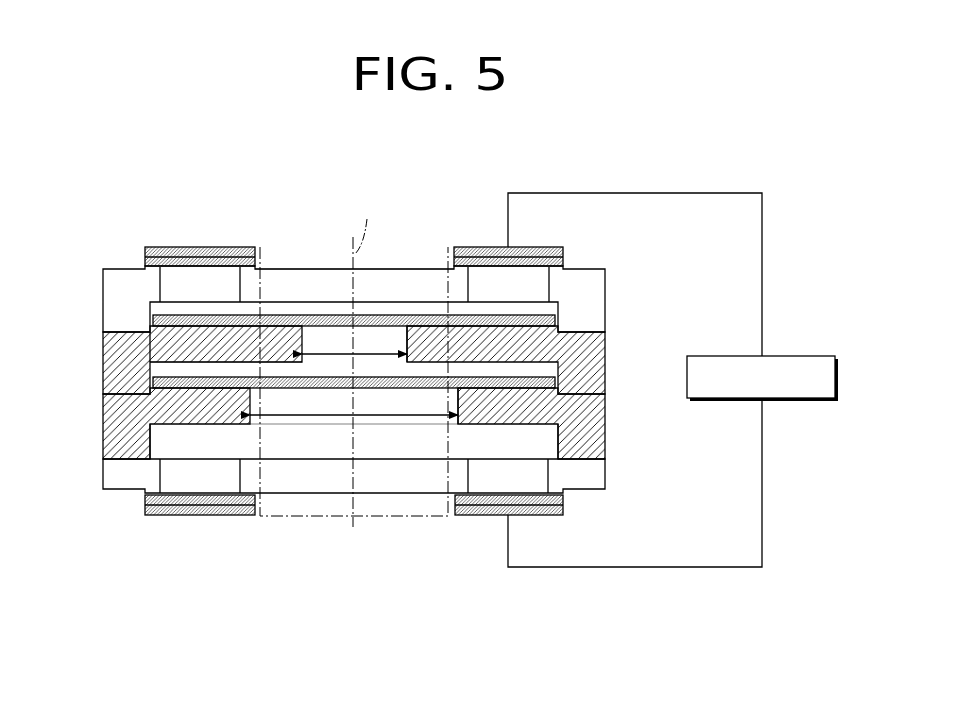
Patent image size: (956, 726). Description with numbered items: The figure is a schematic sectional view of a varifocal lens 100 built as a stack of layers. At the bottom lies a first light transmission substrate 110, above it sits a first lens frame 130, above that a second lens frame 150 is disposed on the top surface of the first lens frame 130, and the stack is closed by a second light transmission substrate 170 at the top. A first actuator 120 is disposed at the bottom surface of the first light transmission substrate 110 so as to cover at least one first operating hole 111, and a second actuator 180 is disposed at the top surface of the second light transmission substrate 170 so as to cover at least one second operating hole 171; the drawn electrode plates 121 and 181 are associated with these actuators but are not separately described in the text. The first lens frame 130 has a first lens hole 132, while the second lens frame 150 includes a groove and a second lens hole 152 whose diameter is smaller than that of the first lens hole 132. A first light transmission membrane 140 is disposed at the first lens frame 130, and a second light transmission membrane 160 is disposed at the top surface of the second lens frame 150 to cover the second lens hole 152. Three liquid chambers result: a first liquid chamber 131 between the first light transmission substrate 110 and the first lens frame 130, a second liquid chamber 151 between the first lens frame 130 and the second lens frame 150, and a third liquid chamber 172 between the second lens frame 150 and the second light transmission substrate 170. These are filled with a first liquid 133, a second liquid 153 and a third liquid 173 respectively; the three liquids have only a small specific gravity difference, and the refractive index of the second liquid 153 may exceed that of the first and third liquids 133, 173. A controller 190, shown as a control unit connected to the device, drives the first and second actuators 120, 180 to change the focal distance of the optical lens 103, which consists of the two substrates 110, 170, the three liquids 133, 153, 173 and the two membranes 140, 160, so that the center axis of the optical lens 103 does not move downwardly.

The varifocal lens 100 is at (503, 158).
The optical lens 103 is at (285, 248).
The first light transmission substrate 110 is at (385, 512).
The first operating hole 111 is at (547, 478).
The first actuator 120 is at (385, 530).
The lower terminal electrode 121 is at (563, 498).
The first lens frame 130 is at (359, 475).
The first liquid chamber 131 is at (157, 447).
The first lens hole 132 is at (445, 411).
The first liquid 133 is at (318, 444).
The first light transmission membrane 140 is at (538, 374).
The second lens frame 150 is at (359, 312).
The second liquid chamber 151 is at (155, 367).
The second lens hole 152 is at (402, 339).
The second liquid 153 is at (200, 372).
The second light transmission membrane 160 is at (359, 313).
The second light transmission substrate 170 is at (359, 266).
The second operating hole 171 is at (238, 283).
The third liquid chamber 172 is at (155, 320).
The third liquid 173 is at (188, 309).
The second actuator 180 is at (386, 234).
The upper terminal electrode 181 is at (565, 262).
The controller 190 is at (800, 353).